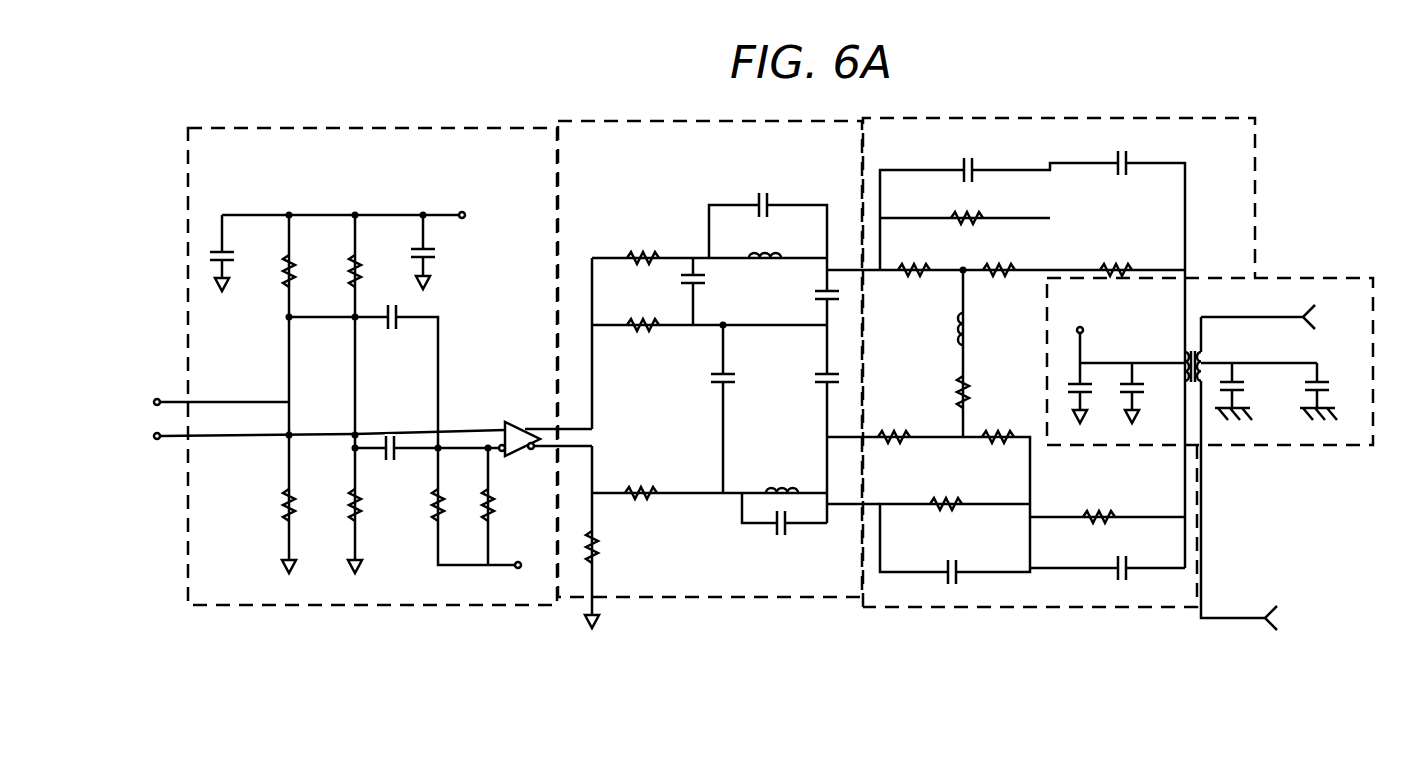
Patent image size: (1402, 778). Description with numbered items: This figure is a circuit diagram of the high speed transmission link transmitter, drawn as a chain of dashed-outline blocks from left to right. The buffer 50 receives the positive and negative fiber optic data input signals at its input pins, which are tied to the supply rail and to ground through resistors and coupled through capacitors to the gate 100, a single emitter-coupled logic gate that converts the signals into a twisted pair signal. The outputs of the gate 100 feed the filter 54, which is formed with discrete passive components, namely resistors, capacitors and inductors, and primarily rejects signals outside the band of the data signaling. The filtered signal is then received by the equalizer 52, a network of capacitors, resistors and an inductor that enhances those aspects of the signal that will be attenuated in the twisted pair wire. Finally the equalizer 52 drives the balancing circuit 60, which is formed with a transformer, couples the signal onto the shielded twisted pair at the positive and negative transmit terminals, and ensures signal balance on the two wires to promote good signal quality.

The buffer 50 is at (392, 606).
The filter 54 is at (699, 597).
The equalizer 52 is at (905, 607).
The balancing circuit 60 is at (1305, 277).
The gate 100 is at (518, 428).